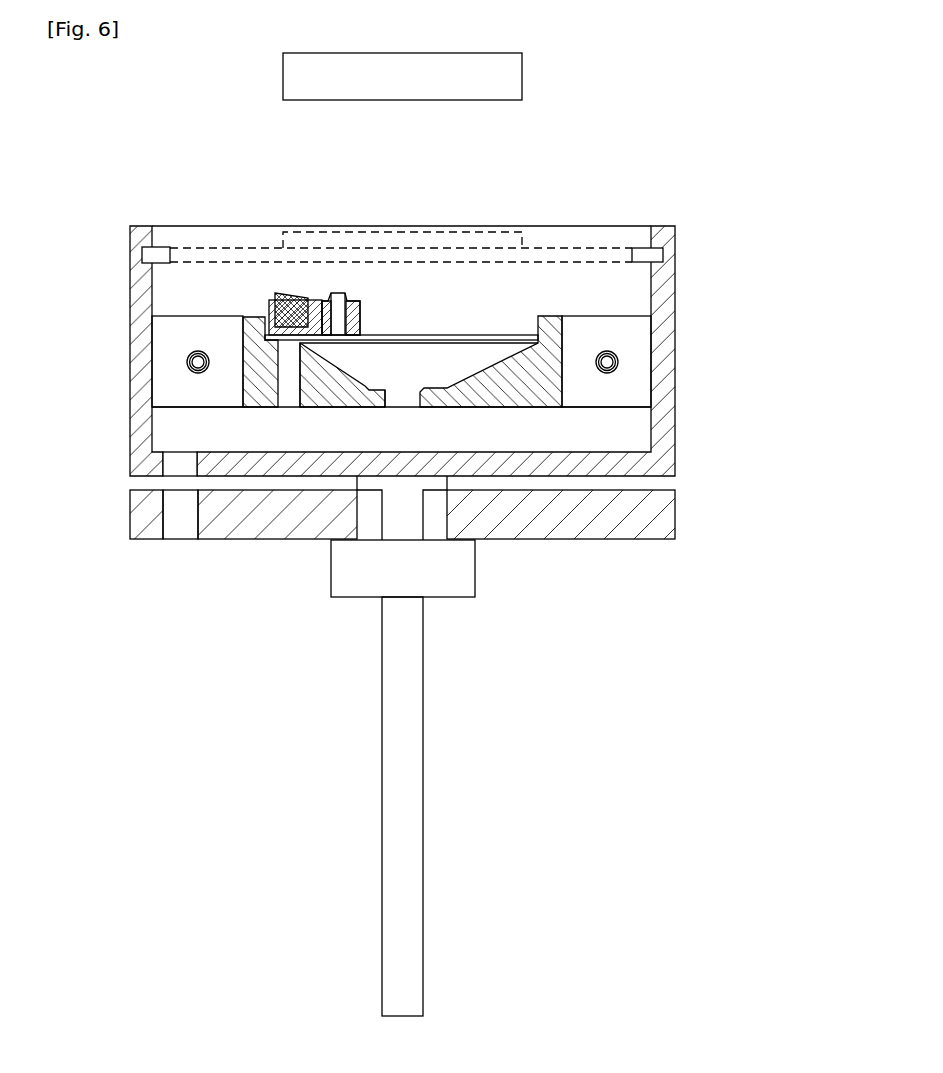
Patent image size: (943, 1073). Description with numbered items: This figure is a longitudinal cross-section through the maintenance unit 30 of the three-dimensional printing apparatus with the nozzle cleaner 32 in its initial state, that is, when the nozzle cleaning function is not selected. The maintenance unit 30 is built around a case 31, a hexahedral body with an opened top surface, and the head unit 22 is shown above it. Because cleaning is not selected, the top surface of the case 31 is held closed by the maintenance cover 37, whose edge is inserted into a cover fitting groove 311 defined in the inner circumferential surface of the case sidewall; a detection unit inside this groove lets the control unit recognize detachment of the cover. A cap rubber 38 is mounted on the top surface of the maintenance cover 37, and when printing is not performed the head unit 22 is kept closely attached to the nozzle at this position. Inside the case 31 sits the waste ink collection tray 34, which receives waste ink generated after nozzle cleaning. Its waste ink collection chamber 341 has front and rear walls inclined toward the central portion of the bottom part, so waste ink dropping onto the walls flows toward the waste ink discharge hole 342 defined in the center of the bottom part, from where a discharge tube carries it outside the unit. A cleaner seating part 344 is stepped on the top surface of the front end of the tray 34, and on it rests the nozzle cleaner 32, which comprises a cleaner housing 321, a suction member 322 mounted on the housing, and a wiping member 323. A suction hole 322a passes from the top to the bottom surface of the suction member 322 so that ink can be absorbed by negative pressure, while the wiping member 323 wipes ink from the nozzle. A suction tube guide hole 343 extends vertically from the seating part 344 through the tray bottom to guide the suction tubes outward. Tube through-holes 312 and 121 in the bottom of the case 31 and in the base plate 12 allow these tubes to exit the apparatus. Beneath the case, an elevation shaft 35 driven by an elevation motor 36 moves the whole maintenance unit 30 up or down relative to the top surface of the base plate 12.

The head unit 22 is at (513, 76).
The maintenance unit 30 is at (101, 192).
The case 31 is at (402, 327).
The cover fitting groove 311 is at (650, 254).
The tube through-hole 312 is at (180, 460).
The maintenance cover 37 is at (549, 248).
The cap rubber 38 is at (460, 232).
The nozzle cleaner 32 is at (385, 247).
The cleaner housing 321 is at (268, 305).
The suction member 322 is at (349, 293).
The suction hole 322a is at (383, 260).
The wiping member 323 is at (293, 293).
The waste ink collection tray 34 is at (397, 435).
The waste ink collection chamber 341 is at (345, 372).
The waste ink discharge hole 342 is at (410, 392).
The suction tube guide hole 343 is at (286, 376).
The cleaner seating part 344 is at (243, 362).
The elevation shaft 35 is at (415, 755).
The elevation motor 36 is at (457, 588).
The base plate 12 is at (402, 514).
The tube through-hole 121 is at (180, 511).